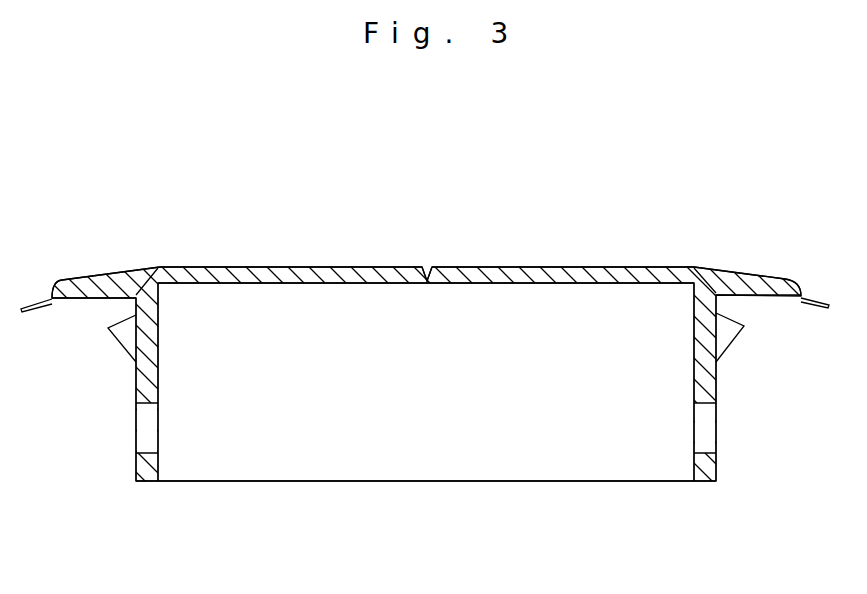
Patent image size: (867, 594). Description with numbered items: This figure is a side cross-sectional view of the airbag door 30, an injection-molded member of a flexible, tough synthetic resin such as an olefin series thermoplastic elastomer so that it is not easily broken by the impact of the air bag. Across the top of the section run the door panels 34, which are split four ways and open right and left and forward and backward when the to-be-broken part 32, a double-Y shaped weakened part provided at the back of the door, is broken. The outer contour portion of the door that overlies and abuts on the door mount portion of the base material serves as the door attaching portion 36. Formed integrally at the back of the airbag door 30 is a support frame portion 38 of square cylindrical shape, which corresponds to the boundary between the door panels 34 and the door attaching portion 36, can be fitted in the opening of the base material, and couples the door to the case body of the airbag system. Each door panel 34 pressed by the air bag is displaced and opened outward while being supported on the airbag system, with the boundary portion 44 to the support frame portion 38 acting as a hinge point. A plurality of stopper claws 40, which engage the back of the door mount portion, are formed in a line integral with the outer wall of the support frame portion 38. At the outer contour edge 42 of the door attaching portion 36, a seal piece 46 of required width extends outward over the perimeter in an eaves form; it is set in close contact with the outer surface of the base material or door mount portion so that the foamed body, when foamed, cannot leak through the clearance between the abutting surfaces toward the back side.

The airbag door 30 is at (450, 244).
The to-be-broken part 32 is at (426, 275).
The door panels 34 is at (300, 272).
The door attaching portion 36 is at (80, 282).
The support frame portion 38 is at (702, 478).
The stopper claws 40 is at (125, 333).
The outer contour edge 42 is at (43, 278).
The boundary portion 44 is at (164, 271).
The seal piece 46 is at (40, 306).